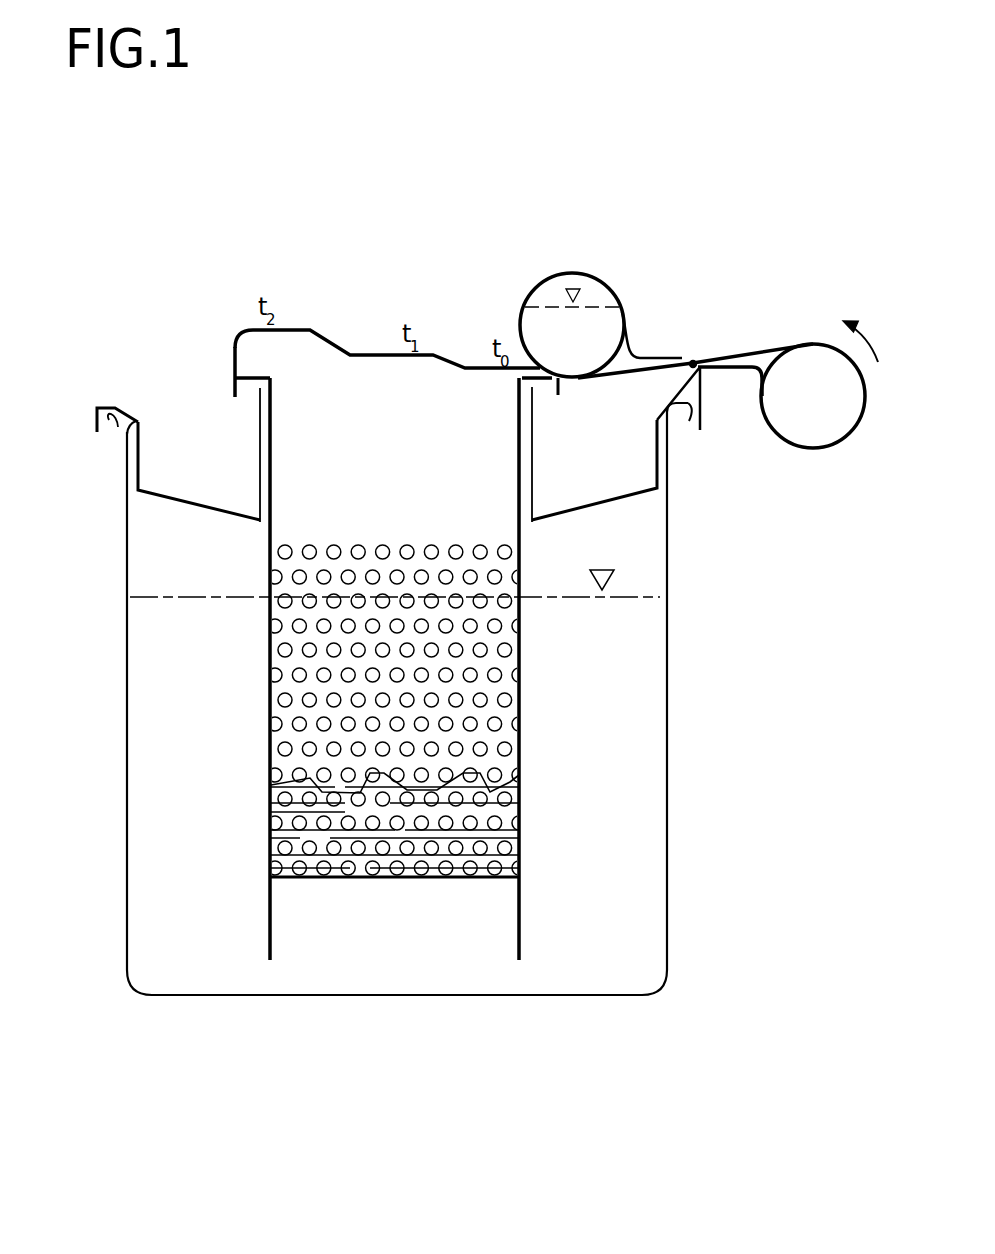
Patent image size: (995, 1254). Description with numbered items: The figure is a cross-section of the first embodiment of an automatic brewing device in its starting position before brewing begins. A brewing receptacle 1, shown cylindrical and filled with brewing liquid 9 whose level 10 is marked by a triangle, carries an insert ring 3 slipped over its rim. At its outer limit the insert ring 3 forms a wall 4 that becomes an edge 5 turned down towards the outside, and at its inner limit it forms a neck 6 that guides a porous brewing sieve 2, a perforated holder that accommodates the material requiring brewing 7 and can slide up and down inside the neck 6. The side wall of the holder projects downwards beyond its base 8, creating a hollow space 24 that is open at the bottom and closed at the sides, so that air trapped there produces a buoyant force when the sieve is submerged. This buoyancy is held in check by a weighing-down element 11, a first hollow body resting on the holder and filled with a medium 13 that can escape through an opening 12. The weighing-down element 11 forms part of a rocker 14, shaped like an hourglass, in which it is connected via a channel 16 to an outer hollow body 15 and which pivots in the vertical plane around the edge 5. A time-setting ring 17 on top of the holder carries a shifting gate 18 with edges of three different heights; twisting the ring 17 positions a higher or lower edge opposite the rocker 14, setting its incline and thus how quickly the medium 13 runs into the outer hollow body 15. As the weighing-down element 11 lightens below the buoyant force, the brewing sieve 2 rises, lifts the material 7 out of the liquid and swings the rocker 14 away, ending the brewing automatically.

The brewing receptacle 1 is at (127, 644).
The brewing sieve 2 is at (270, 644).
The insert ring 3 is at (193, 498).
The wall 4 is at (140, 457).
The edge 5 is at (93, 417).
The neck 6 is at (253, 450).
The material requiring brewing 7 is at (492, 790).
The base 8 is at (313, 880).
The brewing liquid 9 is at (630, 740).
The level 10 is at (614, 570).
The weighing-down element 11 is at (553, 273).
The opening 12 is at (682, 355).
The medium 13 is at (610, 330).
The rocker 14 is at (668, 336).
The outer hollow body 15 is at (847, 437).
The channel 16 is at (727, 367).
The ring 17 is at (237, 372).
The shifting gate 18 is at (335, 340).
The hollow space 24 is at (450, 953).